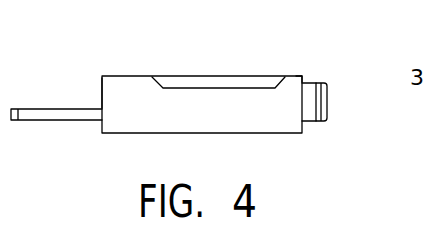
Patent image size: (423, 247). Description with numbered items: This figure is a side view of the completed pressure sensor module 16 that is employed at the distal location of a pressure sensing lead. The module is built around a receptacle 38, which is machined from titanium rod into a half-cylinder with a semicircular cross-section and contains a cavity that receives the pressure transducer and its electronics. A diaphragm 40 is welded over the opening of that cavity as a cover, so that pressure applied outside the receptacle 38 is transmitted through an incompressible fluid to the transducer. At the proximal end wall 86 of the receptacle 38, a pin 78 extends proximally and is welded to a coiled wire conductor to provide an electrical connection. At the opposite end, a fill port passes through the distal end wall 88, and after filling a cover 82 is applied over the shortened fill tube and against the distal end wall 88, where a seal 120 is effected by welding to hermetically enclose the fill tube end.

The pressure sensor module 16 is at (168, 24).
The receptacle 38 is at (128, 88).
The diaphragm 40 is at (217, 77).
The proximal end wall 86 is at (102, 88).
The pin 78 is at (32, 117).
The seal 120 is at (303, 77).
The cover 82 is at (316, 88).
The distal end wall 88 is at (308, 122).